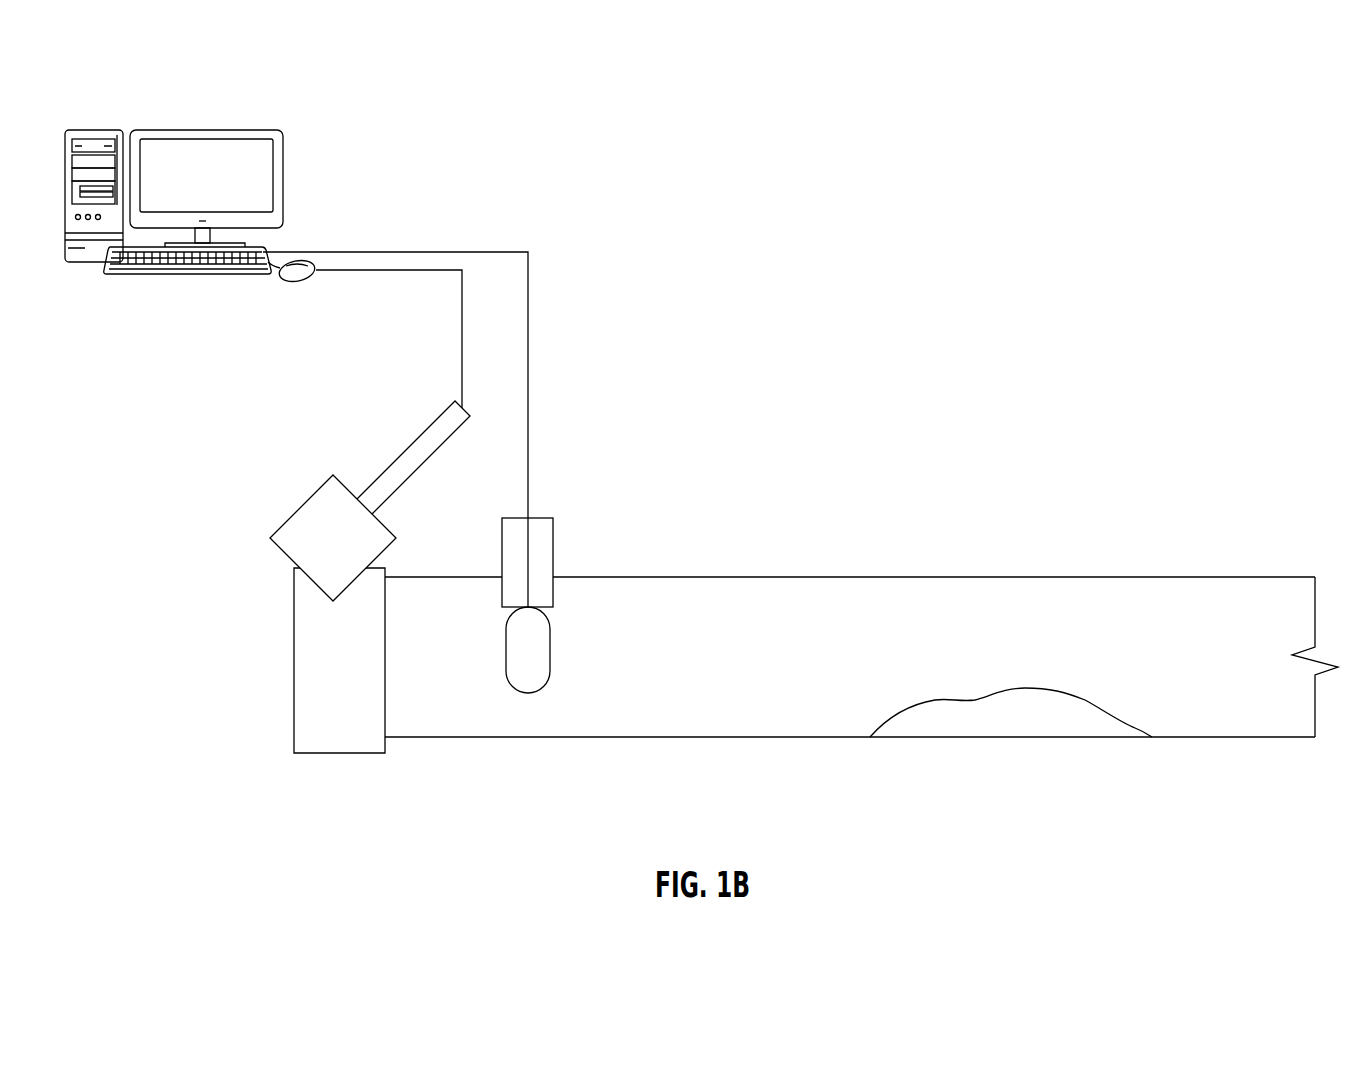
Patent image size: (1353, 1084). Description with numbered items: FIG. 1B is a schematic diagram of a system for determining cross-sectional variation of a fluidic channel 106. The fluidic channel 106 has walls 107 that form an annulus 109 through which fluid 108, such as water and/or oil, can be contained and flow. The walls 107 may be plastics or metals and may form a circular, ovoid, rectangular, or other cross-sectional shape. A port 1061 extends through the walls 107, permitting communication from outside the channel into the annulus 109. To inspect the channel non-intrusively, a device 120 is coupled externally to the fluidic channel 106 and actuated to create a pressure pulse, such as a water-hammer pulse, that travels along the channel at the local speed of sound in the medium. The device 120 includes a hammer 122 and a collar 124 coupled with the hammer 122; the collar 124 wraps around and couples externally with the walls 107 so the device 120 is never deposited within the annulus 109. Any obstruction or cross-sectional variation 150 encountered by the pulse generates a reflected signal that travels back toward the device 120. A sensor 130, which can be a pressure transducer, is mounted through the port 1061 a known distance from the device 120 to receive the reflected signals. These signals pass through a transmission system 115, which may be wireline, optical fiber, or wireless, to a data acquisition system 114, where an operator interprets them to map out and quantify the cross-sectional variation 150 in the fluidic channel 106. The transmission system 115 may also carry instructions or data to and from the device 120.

The fluidic channel 106 is at (861, 641).
The walls 107 is at (915, 577).
The fluid 108 is at (1255, 603).
The annulus 109 is at (1166, 672).
The data acquisition system 114 is at (263, 131).
The transmission system 115 is at (497, 252).
The device 120 is at (176, 421).
The hammer 122 is at (270, 538).
The collar 124 is at (294, 660).
The sensor 130 is at (552, 660).
The cross-sectional variation 150 is at (1003, 738).
The port 1061 is at (555, 546).